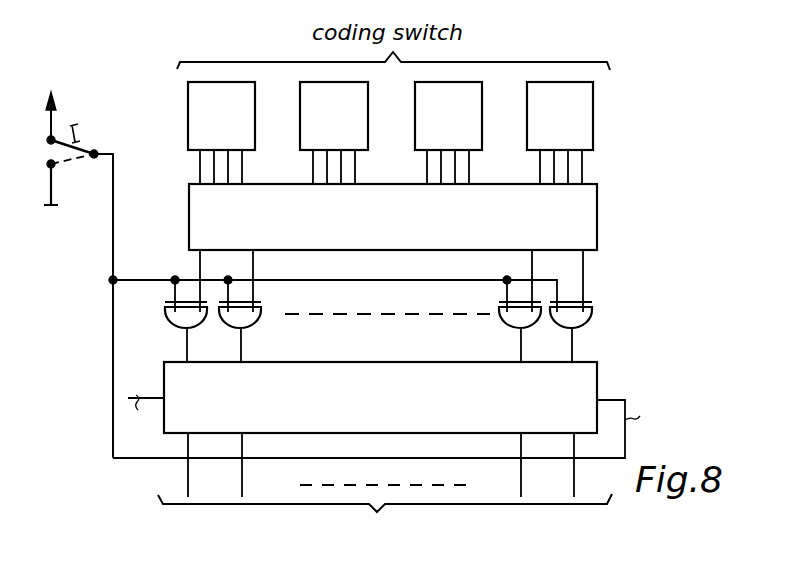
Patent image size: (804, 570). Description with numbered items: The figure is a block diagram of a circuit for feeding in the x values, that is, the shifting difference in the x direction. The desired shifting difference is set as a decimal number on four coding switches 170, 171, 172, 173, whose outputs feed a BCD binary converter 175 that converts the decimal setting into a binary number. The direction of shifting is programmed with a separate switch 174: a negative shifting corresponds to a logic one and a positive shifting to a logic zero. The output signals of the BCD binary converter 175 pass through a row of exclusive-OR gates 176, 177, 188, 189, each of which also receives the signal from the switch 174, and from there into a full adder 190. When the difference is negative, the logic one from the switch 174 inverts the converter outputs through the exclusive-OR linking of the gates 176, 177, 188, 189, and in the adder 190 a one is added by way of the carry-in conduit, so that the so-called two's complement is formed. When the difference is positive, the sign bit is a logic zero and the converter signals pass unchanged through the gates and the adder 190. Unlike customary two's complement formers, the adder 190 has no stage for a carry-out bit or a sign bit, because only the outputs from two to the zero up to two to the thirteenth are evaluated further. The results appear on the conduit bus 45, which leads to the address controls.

The conduit bus 45 is at (385, 486).
The coding switch 170 is at (243, 125).
The coding switch 171 is at (361, 132).
The coding switch 172 is at (472, 125).
The coding switch 173 is at (585, 125).
The switch 174 is at (88, 148).
The BCD binary converter 175 is at (583, 221).
The exclusive-OR gate 176 is at (586, 313).
The exclusive-OR gate 177 is at (519, 318).
The exclusive-OR gate 188 is at (242, 318).
The exclusive-OR gate 189 is at (185, 320).
The full adder 190 is at (583, 387).